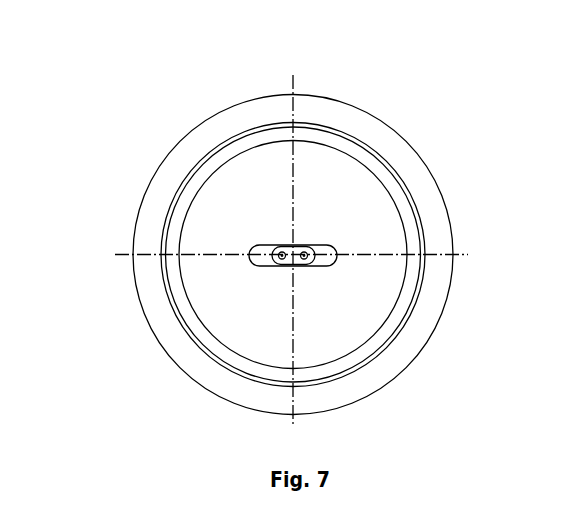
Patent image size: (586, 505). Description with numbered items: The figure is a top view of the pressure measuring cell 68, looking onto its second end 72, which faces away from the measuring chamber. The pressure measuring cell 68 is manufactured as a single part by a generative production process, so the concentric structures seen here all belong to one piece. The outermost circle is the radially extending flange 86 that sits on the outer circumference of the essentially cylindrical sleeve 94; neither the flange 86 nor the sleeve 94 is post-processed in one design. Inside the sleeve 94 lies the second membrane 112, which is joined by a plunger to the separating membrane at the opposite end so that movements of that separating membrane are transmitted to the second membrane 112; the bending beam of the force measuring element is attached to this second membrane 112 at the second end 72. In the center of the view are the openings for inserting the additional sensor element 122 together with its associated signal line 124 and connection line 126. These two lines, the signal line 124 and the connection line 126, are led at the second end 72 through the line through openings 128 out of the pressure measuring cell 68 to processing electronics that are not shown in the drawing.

The pressure measuring cell 68 is at (128, 85).
The second end 72 is at (106, 166).
The flange 86 is at (427, 317).
The sleeve 94 is at (428, 232).
The second membrane 112 is at (238, 200).
The additional sensor element 122 is at (301, 246).
The signal line 124 is at (280, 258).
The connection line 126 is at (307, 259).
The line through openings 128 is at (325, 250).